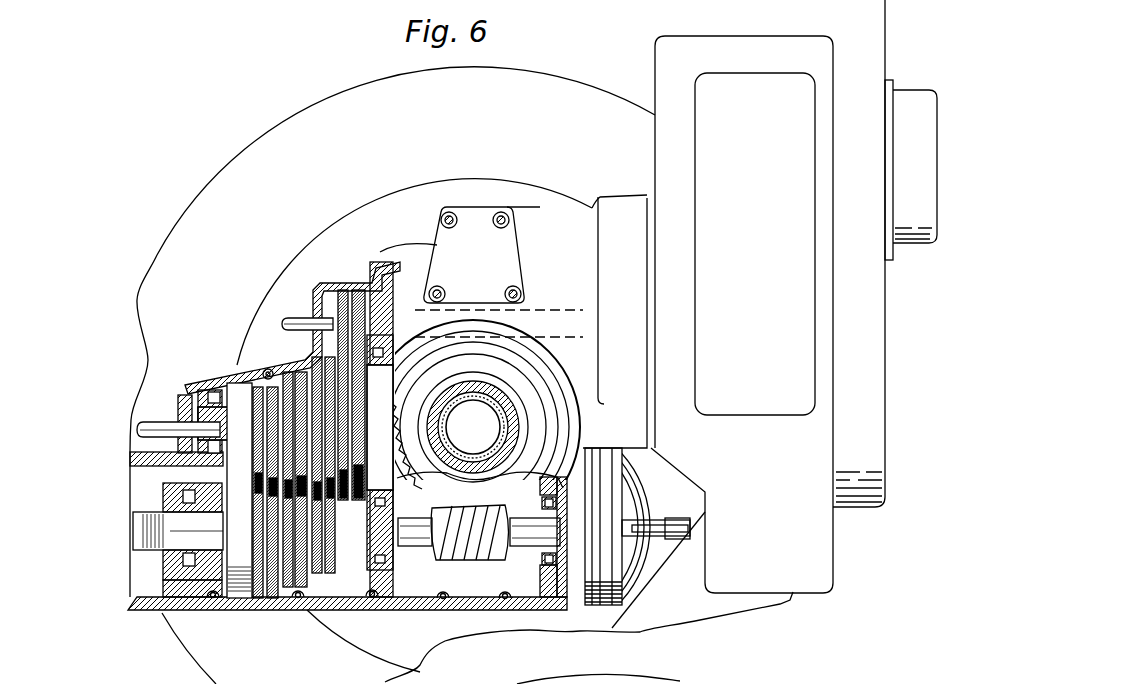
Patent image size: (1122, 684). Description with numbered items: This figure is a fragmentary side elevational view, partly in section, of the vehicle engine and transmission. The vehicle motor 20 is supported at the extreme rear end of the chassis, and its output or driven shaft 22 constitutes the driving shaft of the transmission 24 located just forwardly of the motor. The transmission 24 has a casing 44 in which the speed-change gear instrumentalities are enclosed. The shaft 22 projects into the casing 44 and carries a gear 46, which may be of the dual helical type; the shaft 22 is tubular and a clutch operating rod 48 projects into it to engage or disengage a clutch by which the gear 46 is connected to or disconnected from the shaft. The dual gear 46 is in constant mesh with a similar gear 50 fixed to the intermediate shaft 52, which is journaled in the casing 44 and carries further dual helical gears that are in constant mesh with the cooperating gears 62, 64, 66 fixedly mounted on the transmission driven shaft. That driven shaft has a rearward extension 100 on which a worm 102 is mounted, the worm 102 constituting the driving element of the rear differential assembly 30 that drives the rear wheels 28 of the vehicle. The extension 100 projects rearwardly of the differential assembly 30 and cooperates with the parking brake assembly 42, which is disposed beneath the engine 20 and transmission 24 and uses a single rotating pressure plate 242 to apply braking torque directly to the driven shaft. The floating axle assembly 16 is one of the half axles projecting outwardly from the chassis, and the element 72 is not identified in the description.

The floating axle assembly 16 is at (470, 396).
The vehicle motor 20 is at (745, 39).
The driven shaft 22 is at (535, 312).
The transmission 24 is at (236, 344).
The rear wheels 28 is at (228, 168).
The rear differential assembly 30 is at (423, 498).
The parking brake assembly 42 is at (642, 587).
The casing 44 is at (230, 368).
The gear 46 is at (358, 288).
The clutch operating rod 48 is at (300, 318).
The gear 50 is at (357, 500).
The intermediate shaft 52 is at (200, 405).
The cooperating gear 62 is at (330, 571).
The cooperating gear 64 is at (305, 588).
The cooperating gear 66 is at (278, 600).
The shaft 72 is at (240, 600).
The rearward extension 100 is at (423, 548).
The worm 102 is at (480, 556).
The rotating pressure plate 242 is at (605, 606).